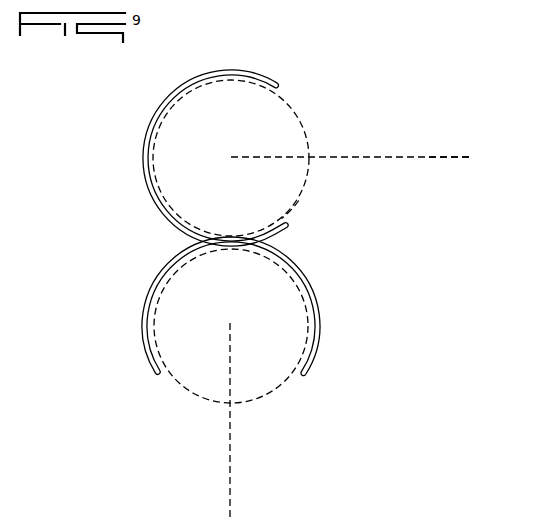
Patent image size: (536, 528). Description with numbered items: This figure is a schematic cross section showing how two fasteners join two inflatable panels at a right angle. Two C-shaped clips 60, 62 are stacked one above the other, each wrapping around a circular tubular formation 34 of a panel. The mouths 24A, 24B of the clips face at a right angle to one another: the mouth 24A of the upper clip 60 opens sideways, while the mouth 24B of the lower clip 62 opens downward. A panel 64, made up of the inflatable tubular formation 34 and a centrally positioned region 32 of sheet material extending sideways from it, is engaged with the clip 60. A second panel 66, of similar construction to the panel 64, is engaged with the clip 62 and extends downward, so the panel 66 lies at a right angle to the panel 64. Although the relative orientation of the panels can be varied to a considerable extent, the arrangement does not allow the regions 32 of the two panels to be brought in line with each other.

The mouth 24A is at (320, 117).
The mouth 24B is at (290, 394).
The inflatable tubular section 34 is at (294, 206).
The C-shaped clip 60 is at (175, 93).
The C-shaped clip 62 is at (318, 316).
The panel 64 is at (382, 148).
The enclosed region 32 is at (437, 160).
The second panel 66 is at (218, 421).